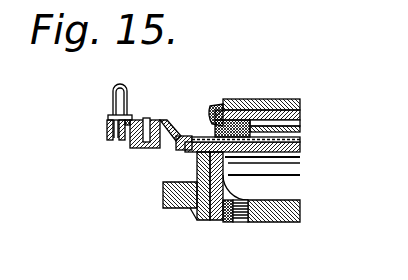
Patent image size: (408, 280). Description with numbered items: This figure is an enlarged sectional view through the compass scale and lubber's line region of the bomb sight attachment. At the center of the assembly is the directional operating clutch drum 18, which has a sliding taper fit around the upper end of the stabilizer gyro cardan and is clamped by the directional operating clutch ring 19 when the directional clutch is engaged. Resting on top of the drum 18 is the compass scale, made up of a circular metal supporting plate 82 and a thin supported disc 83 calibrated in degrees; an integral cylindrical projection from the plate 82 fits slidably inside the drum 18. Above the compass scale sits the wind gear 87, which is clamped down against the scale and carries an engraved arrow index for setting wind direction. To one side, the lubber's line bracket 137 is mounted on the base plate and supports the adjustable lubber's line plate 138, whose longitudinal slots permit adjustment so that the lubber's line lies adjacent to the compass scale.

The directional operating clutch drum 18 is at (277, 195).
The directional operating clutch ring 19 is at (203, 213).
The circular metal supporting plate 82 is at (180, 151).
The thin supported disc 83 is at (201, 136).
The wind gear 87 is at (209, 112).
The lubber's line bracket 137 is at (134, 149).
The adjustable lubber's line plate 138 is at (158, 121).